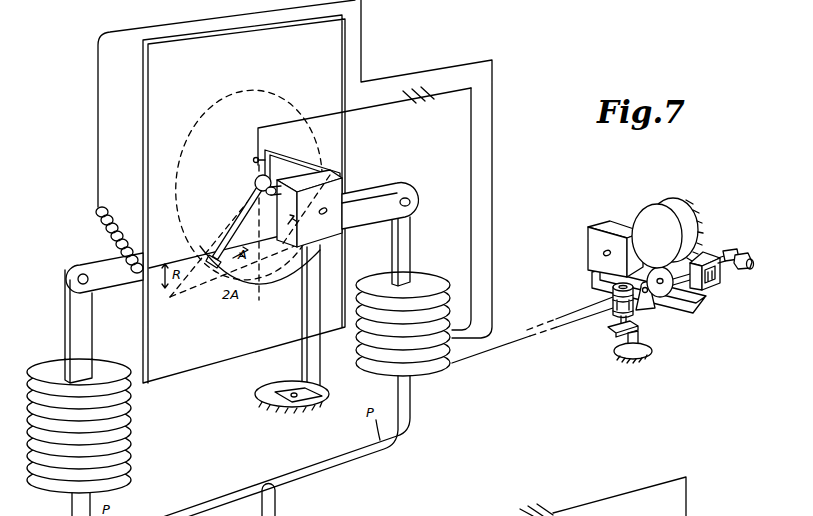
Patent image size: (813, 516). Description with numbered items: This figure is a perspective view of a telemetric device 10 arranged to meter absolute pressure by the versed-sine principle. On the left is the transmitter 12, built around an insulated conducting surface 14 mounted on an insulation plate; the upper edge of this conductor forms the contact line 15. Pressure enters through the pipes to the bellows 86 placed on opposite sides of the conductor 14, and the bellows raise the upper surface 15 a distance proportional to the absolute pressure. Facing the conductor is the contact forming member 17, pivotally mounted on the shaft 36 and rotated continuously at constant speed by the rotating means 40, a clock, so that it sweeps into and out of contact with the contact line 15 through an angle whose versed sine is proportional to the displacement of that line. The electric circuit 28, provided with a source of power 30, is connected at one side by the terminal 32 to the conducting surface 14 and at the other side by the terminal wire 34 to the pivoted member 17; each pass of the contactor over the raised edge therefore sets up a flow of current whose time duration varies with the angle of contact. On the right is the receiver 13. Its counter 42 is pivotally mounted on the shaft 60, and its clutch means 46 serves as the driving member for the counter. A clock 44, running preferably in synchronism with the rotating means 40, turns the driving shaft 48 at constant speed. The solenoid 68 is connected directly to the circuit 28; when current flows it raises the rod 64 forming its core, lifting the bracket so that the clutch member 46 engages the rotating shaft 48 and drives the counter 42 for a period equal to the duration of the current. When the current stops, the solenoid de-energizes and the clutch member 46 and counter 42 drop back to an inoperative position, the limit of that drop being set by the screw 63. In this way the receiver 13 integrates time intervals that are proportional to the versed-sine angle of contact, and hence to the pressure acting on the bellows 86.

The telemetric device 10 is at (372, 55).
The transmitter 12 is at (142, 183).
The receiver 13 is at (667, 310).
The conducting surface 14 is at (163, 313).
The contact line 15 is at (165, 265).
The contact forming member 17 is at (237, 227).
The electric circuit 28 is at (492, 296).
The source of power 30 is at (418, 102).
The terminal 32 is at (98, 207).
The terminal wire 34 is at (258, 148).
The shaft 36 is at (270, 198).
The rotating means 40 is at (343, 190).
The counter 42 is at (714, 270).
The clock 44 is at (588, 233).
The clutch means 46 is at (667, 290).
The driving shaft 48 is at (680, 204).
The shaft 60 is at (744, 258).
The screw 63 is at (648, 347).
The rod 64 is at (611, 327).
The solenoid 68 is at (612, 305).
The bellows 86 is at (133, 440).